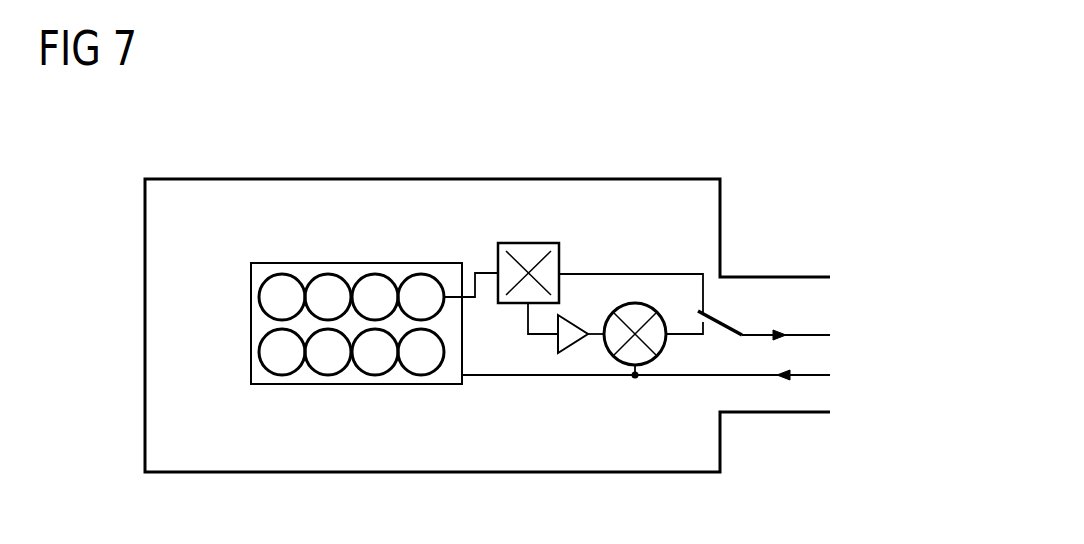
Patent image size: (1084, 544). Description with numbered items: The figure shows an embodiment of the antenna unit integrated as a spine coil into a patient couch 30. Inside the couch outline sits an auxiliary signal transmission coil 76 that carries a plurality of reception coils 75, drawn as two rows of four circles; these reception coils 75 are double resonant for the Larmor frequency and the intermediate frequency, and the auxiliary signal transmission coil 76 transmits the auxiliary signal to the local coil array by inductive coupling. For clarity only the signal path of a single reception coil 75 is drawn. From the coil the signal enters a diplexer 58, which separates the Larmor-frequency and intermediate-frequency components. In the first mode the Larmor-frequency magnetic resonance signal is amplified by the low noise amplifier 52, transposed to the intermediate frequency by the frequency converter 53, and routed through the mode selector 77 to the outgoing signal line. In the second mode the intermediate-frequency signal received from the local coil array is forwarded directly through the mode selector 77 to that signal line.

The patient couch 30 is at (435, 178).
The reception coil 75 is at (377, 274).
The auxiliary signal transmission coil 76 is at (251, 322).
The diplexer 58 is at (530, 243).
The low noise amplifier 52 is at (567, 353).
The frequency converter 53 is at (612, 357).
The mode selector 77 is at (723, 322).